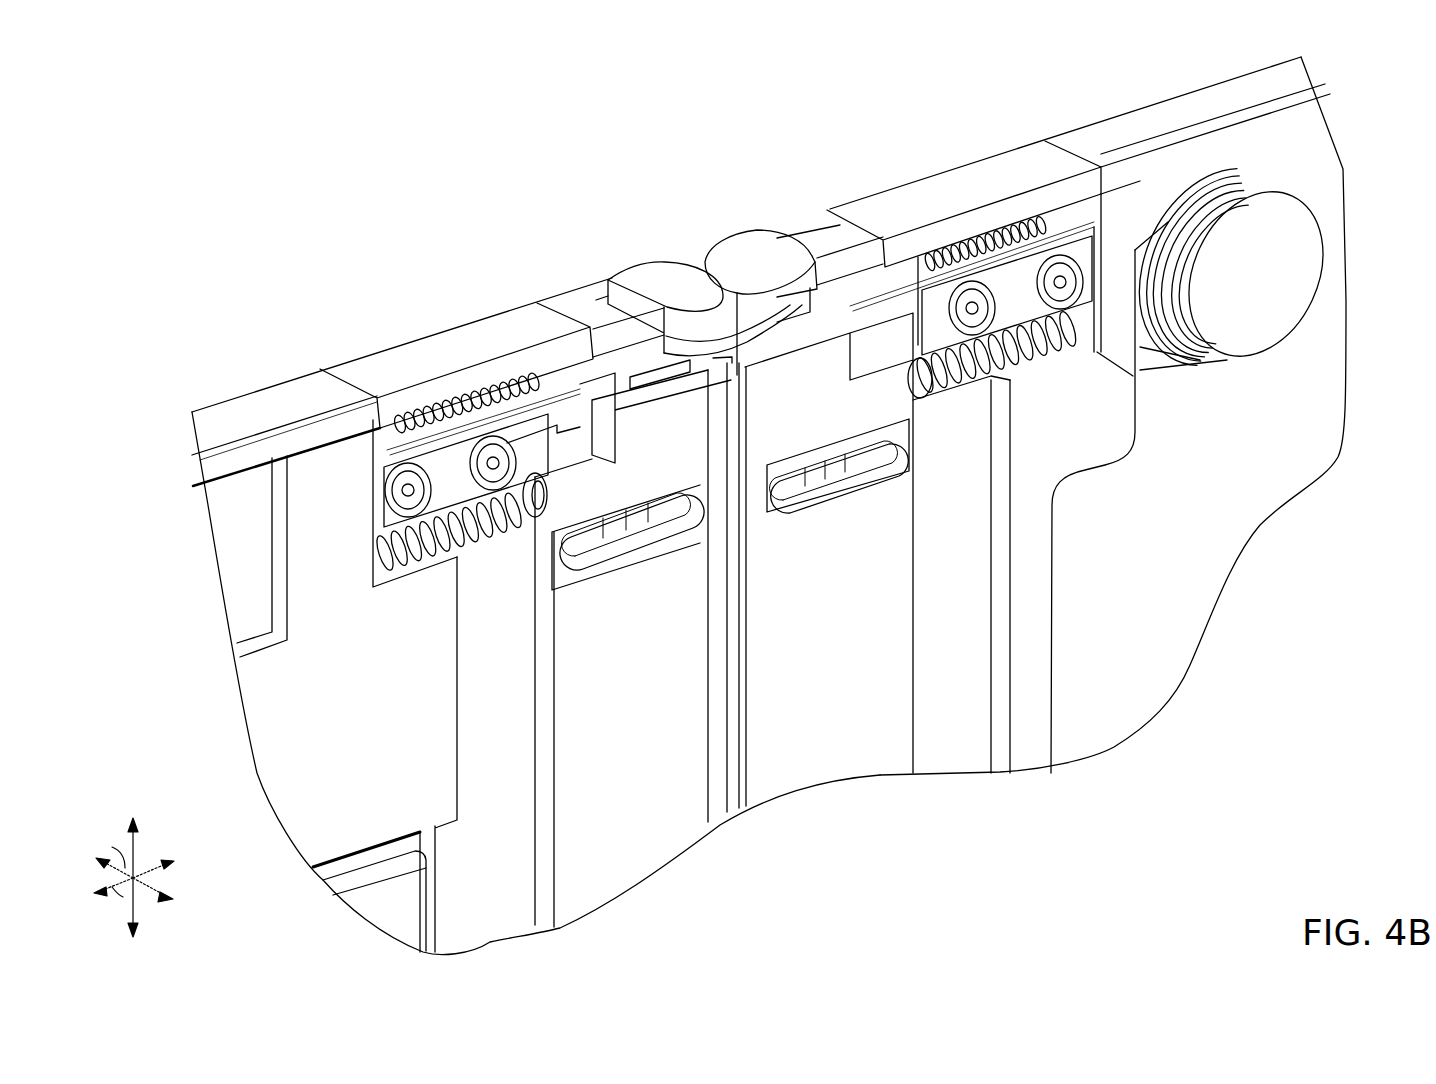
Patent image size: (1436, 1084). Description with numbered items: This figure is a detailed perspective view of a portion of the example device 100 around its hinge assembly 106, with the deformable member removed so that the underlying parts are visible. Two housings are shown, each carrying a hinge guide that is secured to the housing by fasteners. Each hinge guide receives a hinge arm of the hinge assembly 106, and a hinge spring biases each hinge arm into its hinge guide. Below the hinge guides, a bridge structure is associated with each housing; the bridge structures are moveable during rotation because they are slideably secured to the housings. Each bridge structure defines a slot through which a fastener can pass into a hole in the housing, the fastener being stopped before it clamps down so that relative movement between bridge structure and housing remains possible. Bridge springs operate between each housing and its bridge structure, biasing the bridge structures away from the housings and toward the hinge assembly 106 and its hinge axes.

The device 100 is at (228, 84).
The hinge assembly 106 is at (662, 234).